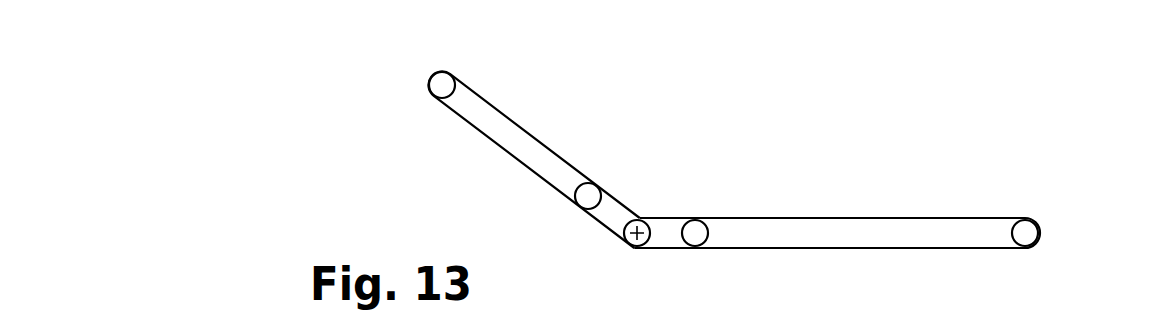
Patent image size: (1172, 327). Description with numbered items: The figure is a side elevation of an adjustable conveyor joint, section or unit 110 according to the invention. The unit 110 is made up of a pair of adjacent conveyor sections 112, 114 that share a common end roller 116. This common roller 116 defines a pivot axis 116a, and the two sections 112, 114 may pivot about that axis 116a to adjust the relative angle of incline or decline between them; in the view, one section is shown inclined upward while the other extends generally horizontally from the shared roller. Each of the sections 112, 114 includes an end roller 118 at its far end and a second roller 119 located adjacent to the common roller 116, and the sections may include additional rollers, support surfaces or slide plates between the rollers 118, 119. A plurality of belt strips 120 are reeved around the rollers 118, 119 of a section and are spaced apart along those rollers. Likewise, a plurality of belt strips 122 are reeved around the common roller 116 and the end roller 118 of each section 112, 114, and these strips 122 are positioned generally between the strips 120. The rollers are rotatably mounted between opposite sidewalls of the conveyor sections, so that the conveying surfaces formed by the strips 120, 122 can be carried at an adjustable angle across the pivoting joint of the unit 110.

The adjustable conveyor joint or section or unit 110 is at (749, 108).
The conveyor section 112 is at (565, 147).
The conveyor section 114 is at (843, 212).
The common end roller 116 is at (633, 248).
The pivot axis 116a is at (628, 246).
The end roller 118 is at (430, 80).
The second roller 119 is at (693, 248).
The belt strips 120 is at (530, 172).
The belt strips 122 is at (937, 217).